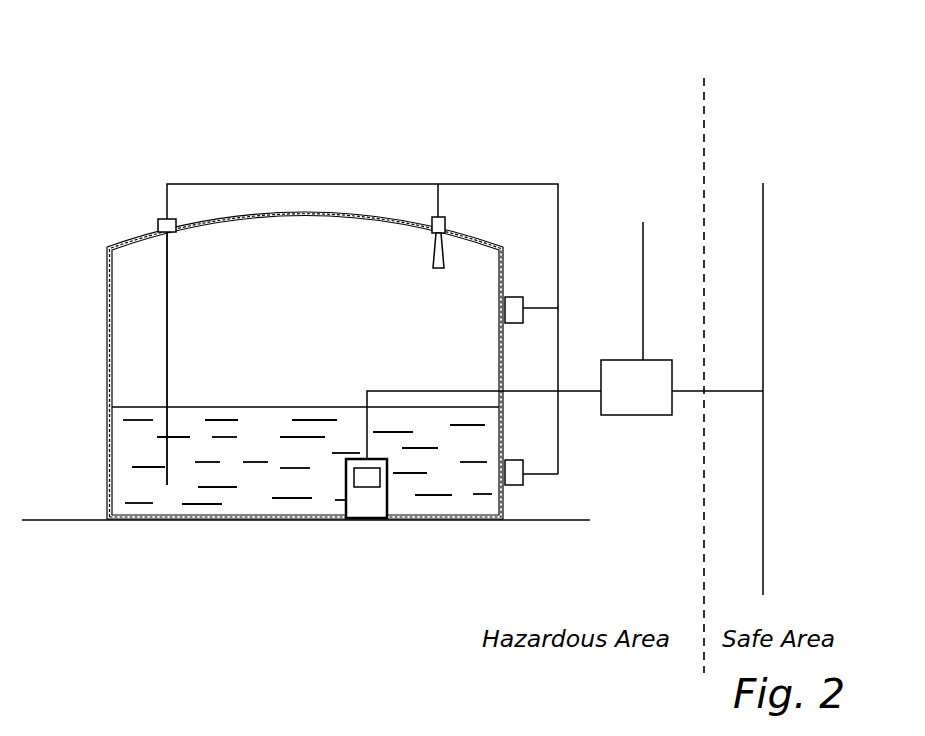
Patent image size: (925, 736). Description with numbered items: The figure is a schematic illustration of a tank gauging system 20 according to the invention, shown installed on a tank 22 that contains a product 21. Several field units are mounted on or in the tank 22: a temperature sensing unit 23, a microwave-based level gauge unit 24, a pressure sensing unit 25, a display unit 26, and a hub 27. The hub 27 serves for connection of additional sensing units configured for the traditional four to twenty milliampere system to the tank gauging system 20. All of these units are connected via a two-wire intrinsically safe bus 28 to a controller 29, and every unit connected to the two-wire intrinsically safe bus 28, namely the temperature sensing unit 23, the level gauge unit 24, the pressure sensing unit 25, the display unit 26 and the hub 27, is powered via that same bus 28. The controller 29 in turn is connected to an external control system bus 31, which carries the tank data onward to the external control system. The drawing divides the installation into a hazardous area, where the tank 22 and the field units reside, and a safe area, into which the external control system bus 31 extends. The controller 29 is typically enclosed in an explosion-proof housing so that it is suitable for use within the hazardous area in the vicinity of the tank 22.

The tank gauging system 20 is at (528, 100).
The product 21 is at (135, 443).
The tank 22 is at (107, 322).
The temperature sensing unit 23 is at (158, 222).
The microwave-based level gauge unit 24 is at (445, 222).
The pressure sensing unit 25 is at (518, 485).
The display unit 26 is at (380, 500).
The hub 27 is at (518, 297).
The two-wire intrinsically safe bus 28 is at (558, 326).
The controller 29 is at (635, 415).
The external control system bus 31 is at (764, 449).